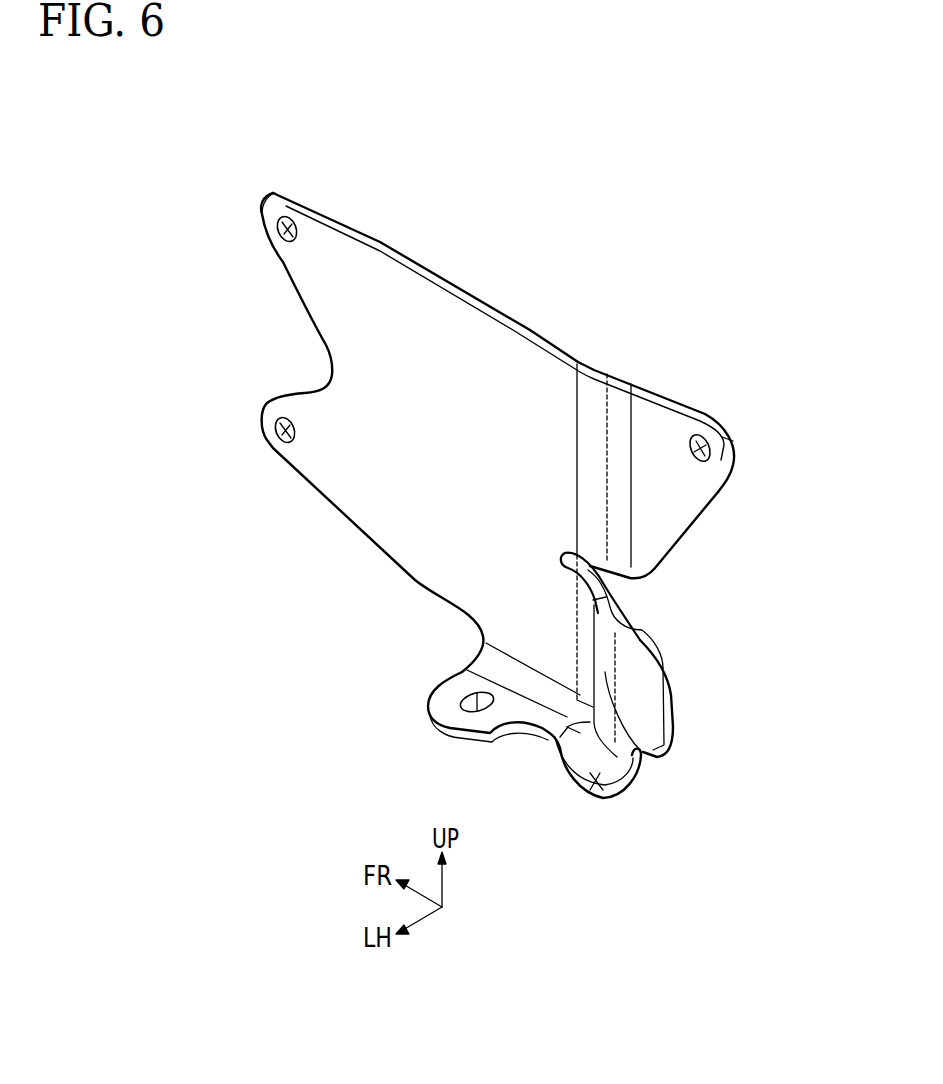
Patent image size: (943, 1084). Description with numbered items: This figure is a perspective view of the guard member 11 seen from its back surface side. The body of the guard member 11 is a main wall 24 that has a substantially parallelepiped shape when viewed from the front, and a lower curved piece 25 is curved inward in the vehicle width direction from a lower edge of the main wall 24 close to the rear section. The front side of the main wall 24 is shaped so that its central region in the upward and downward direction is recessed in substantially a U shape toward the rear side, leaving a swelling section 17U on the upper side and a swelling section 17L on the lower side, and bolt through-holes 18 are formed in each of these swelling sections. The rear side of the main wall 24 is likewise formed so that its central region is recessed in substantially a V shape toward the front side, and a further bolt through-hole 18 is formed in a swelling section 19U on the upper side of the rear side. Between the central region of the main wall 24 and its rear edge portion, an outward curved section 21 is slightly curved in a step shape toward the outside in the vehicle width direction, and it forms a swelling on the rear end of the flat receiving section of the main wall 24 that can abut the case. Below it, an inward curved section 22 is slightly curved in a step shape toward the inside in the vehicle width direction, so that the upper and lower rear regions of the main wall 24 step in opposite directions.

The guard member 11 is at (519, 483).
The swelling section 17U is at (272, 193).
The swelling section 17L is at (272, 450).
The bolt through-hole 18 is at (290, 238).
The swelling section 19U is at (702, 428).
The outward curved section 21 is at (608, 393).
The inward curved section 22 is at (638, 750).
The main wall 24 is at (485, 322).
The lower curved piece 25 is at (600, 587).